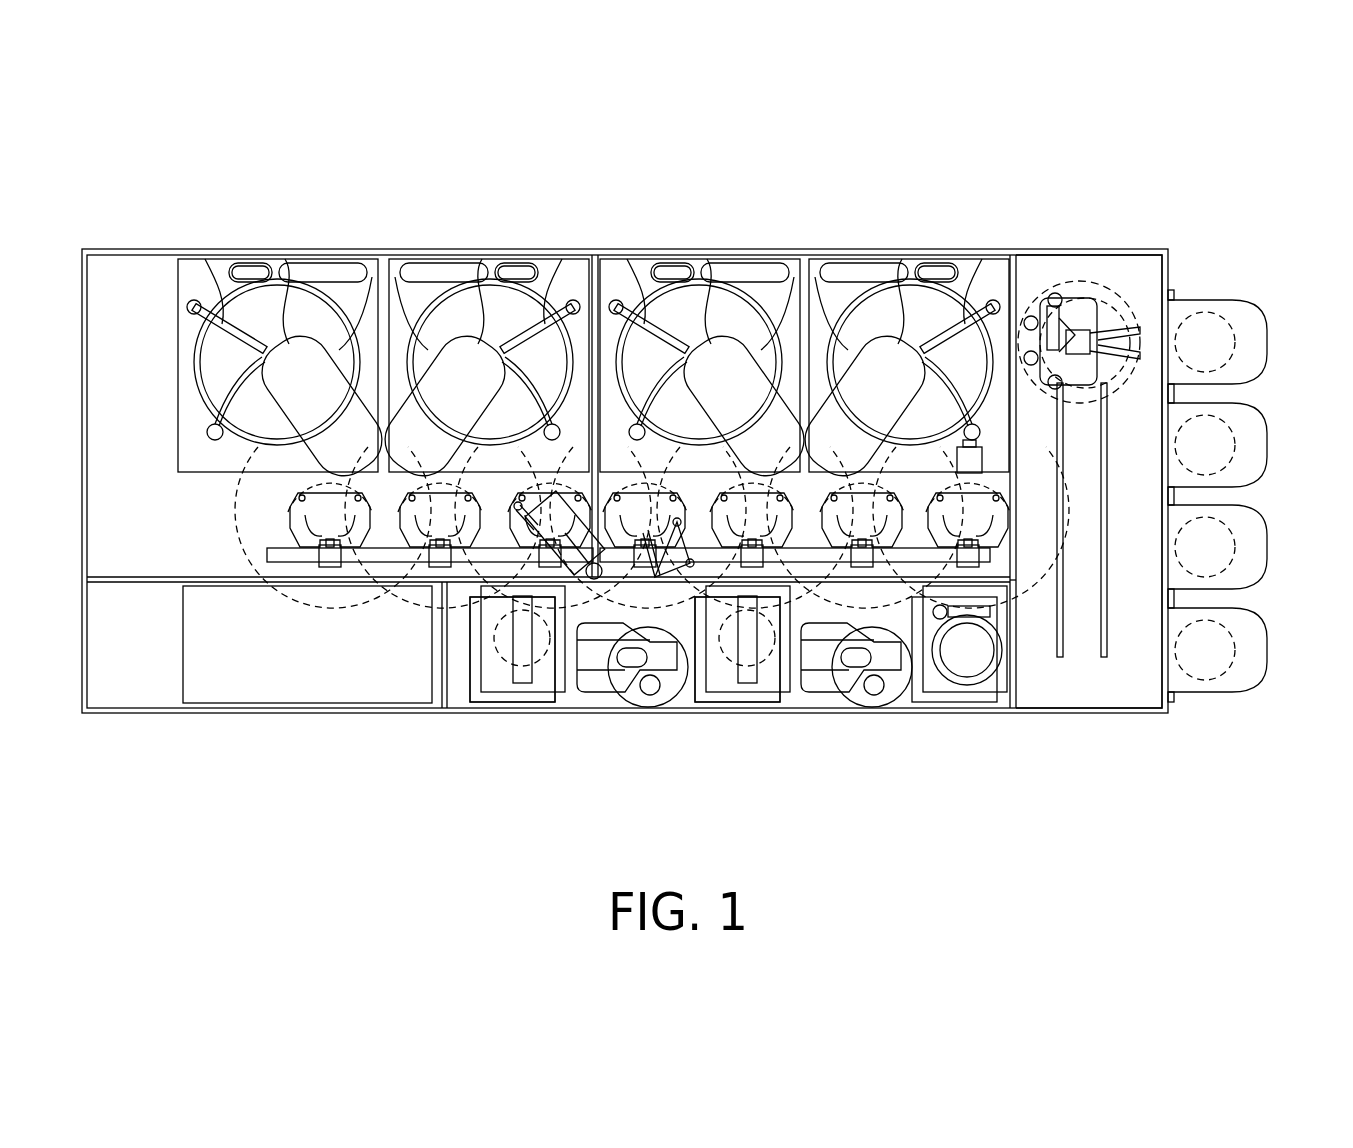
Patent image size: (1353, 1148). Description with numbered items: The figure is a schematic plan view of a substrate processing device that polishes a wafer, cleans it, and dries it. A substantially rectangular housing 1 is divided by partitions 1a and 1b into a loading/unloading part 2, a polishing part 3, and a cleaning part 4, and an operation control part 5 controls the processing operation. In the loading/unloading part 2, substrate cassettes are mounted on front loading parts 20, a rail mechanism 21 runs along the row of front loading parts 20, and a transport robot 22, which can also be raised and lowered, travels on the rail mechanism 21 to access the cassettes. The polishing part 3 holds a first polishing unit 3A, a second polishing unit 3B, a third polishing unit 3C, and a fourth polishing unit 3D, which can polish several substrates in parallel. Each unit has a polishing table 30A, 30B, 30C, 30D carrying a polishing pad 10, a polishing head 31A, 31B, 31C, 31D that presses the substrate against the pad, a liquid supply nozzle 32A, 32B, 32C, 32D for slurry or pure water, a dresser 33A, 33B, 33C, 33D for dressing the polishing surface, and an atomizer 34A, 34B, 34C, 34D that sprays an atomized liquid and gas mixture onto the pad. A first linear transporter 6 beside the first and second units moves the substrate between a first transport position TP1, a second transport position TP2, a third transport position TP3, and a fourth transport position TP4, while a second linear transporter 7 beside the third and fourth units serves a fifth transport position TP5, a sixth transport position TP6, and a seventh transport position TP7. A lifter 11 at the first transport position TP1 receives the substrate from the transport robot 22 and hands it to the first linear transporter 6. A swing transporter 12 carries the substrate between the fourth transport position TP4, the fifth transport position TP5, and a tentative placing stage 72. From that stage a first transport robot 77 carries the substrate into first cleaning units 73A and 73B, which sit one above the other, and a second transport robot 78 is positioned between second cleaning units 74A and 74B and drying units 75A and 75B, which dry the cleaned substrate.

The housing 1 is at (1157, 253).
The partition 1a is at (1036, 258).
The partition 1b is at (1000, 570).
The loading/unloading part 2 is at (1246, 432).
The polishing part 3 is at (834, 158).
The first polishing unit 3A is at (917, 295).
The second polishing unit 3B is at (707, 294).
The third polishing unit 3C is at (499, 294).
The fourth polishing unit 3D is at (271, 294).
The cleaning part 4 is at (728, 714).
The operation control part 5 is at (360, 680).
The first linear transporter 6 is at (800, 540).
The second linear transporter 7 is at (285, 535).
The polishing pad 10 is at (268, 422).
The lifter 11 is at (985, 460).
The swing transporter 12 is at (568, 478).
The front loading part 20 is at (1267, 342).
The rail mechanism 21 is at (1107, 636).
The transport robot 22 is at (1123, 283).
The first polishing table 30A is at (818, 262).
The second polishing table 30B is at (790, 262).
The third polishing table 30C is at (395, 262).
The fourth polishing table 30D is at (375, 262).
The first polishing head 31A is at (900, 262).
The second polishing head 31B is at (708, 262).
The third polishing head 31C is at (483, 262).
The fourth polishing head 31D is at (287, 262).
The first liquid supply nozzle 32A is at (996, 298).
The second liquid supply nozzle 32B is at (634, 412).
The third liquid supply nozzle 32C is at (577, 296).
The fourth liquid supply nozzle 32D is at (190, 296).
The first dresser 33A is at (888, 262).
The second dresser 33B is at (748, 262).
The third dresser 33C is at (472, 262).
The fourth dresser 33D is at (325, 262).
The first atomizer 34A is at (981, 262).
The second atomizer 34B is at (628, 262).
The third atomizer 34C is at (561, 262).
The fourth atomizer 34D is at (209, 262).
The tentative placing stage 72 is at (655, 578).
The first cleaning unit 73A is at (501, 687).
The first cleaning unit 73B is at (530, 700).
The second cleaning unit 74A is at (725, 687).
The second cleaning unit 74B is at (765, 700).
The drying unit 75A is at (938, 690).
The drying unit 75B is at (985, 700).
The first transport robot 77 is at (600, 690).
The second transport robot 78 is at (830, 690).
The first transport position TP1 is at (971, 527).
The second transport position TP2 is at (865, 527).
The third transport position TP3 is at (755, 527).
The fourth transport position TP4 is at (648, 527).
The fifth transport position TP5 is at (553, 527).
The sixth transport position TP6 is at (443, 527).
The seventh transport position TP7 is at (333, 527).